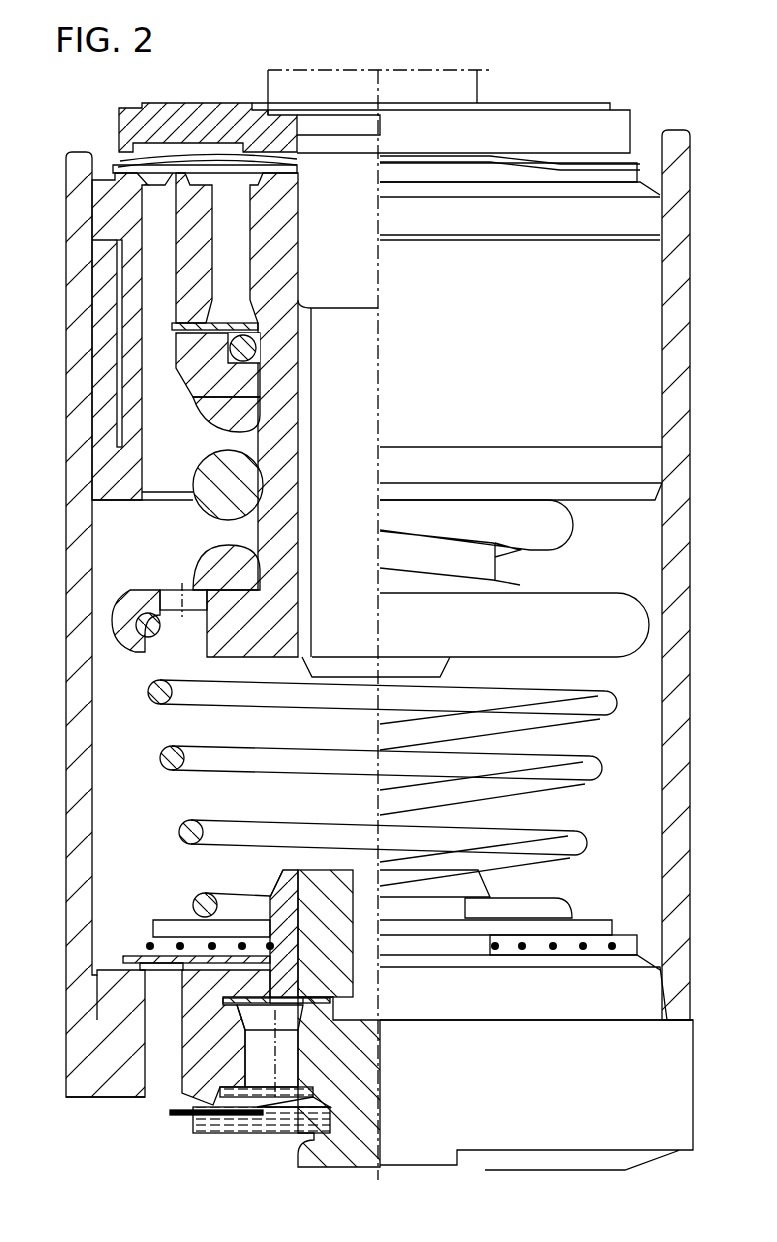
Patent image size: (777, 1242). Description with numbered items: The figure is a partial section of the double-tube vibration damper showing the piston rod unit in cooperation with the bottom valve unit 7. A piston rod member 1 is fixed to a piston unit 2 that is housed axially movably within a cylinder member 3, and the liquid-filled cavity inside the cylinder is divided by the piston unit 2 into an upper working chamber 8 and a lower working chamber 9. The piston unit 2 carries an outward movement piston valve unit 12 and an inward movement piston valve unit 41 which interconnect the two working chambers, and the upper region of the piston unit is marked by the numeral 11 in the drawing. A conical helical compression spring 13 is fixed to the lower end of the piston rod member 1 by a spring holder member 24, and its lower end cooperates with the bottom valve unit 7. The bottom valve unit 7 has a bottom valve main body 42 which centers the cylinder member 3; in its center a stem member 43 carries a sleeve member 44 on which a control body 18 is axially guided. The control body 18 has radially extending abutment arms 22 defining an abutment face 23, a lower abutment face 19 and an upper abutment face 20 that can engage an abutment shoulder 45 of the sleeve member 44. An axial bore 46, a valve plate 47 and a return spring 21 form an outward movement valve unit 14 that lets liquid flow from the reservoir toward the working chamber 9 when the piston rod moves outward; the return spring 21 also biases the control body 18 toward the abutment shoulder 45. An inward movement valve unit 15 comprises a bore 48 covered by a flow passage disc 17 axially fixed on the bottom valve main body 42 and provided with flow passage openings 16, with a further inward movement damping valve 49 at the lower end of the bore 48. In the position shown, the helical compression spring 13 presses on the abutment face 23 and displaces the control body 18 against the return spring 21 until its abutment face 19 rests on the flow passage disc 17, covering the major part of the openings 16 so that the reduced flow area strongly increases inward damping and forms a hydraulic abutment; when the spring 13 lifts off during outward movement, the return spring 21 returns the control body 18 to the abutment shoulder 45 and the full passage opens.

The piston rod member 1 is at (275, 87).
The piston unit 2 is at (100, 208).
The cylinder member 3 is at (74, 433).
The bottom valve unit 7 is at (66, 1100).
The working chamber 8 is at (159, 90).
The working chamber 9 is at (112, 533).
The piston 11 is at (108, 124).
The outward movement piston valve unit 12 is at (155, 372).
The helical compression spring 13 is at (150, 692).
The outward movement valve unit 14 is at (120, 932).
The inward movement valve unit 15 is at (282, 1063).
The flow passage opening 16 is at (282, 1045).
The flow passage disc 17 is at (300, 1012).
The control body 18 is at (265, 1005).
The lower abutment face 19 is at (233, 1000).
The upper abutment face 20 is at (277, 913).
The return spring 21 is at (614, 948).
The abutment arms 22 is at (153, 921).
The abutment face 23 is at (186, 903).
The spring holder member 24 is at (118, 628).
The inward movement piston valve unit 41 is at (112, 164).
The bottom valve main body 42 is at (112, 1098).
The stem member 43 is at (345, 1147).
The sleeve member 44 is at (305, 885).
The abutment shoulder 45 is at (272, 893).
The axial bore 46 is at (165, 1082).
The valve plate 47 is at (120, 958).
The bore 48 is at (228, 1133).
The inward movement damping valve 49 is at (270, 1122).